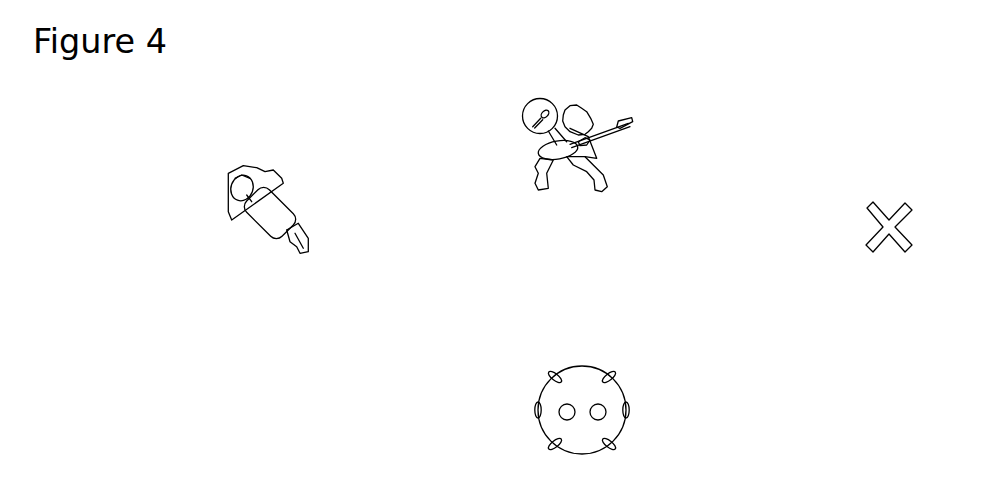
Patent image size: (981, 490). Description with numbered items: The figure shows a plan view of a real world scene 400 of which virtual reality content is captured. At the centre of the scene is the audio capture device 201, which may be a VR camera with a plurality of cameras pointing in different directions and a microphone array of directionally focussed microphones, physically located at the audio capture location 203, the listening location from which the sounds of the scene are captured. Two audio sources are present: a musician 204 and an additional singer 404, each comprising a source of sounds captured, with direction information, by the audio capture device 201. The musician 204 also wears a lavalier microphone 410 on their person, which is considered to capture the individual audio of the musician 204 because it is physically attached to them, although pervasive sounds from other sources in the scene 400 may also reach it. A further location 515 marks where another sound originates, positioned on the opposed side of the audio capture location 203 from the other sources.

The scene 400 is at (148, 293).
The singer 404 is at (235, 173).
The musician 204 is at (580, 117).
The lavalier microphone 410 is at (532, 103).
The location 515 is at (895, 254).
The audio capture location 203 is at (666, 378).
The audio capture device 201 is at (555, 402).